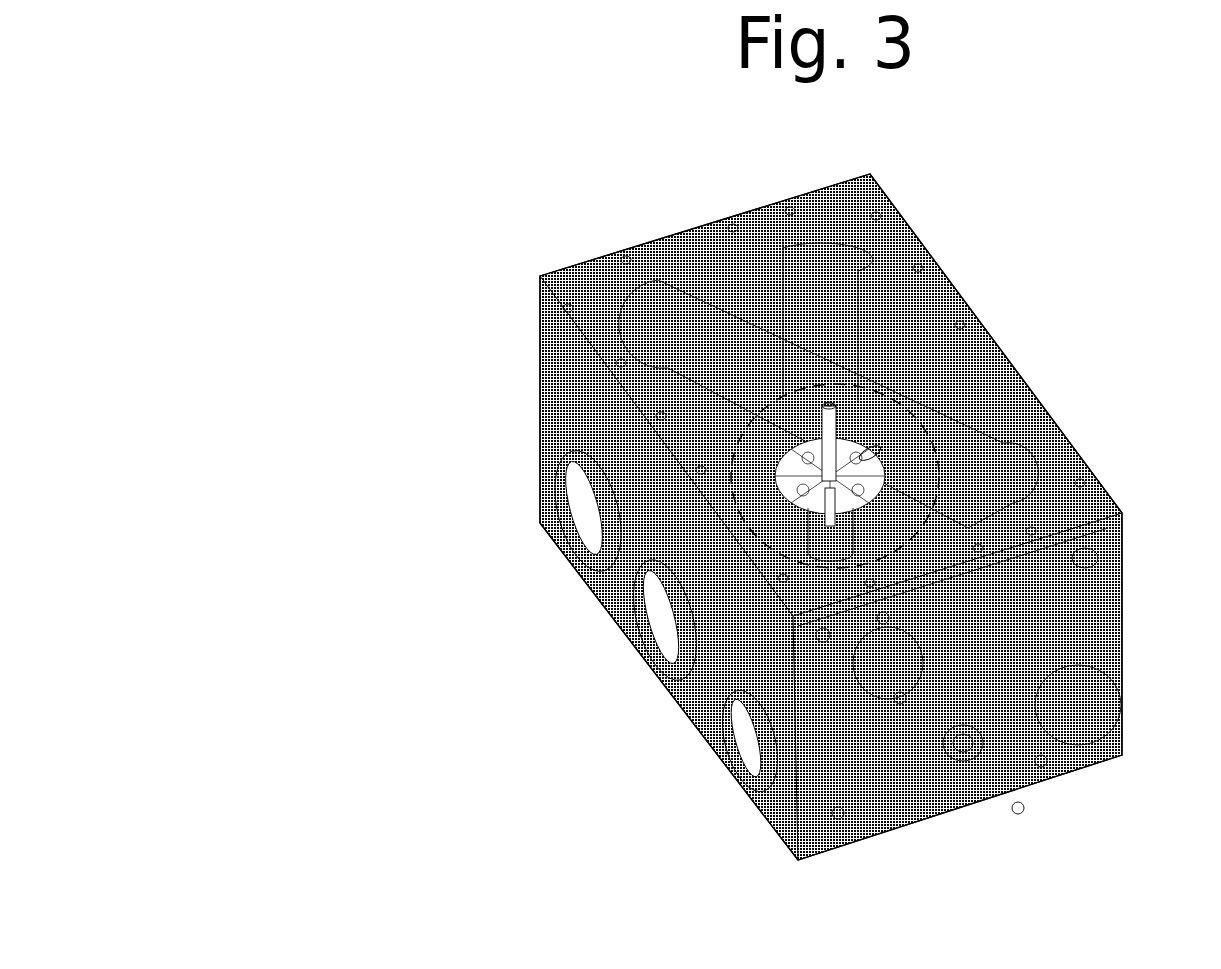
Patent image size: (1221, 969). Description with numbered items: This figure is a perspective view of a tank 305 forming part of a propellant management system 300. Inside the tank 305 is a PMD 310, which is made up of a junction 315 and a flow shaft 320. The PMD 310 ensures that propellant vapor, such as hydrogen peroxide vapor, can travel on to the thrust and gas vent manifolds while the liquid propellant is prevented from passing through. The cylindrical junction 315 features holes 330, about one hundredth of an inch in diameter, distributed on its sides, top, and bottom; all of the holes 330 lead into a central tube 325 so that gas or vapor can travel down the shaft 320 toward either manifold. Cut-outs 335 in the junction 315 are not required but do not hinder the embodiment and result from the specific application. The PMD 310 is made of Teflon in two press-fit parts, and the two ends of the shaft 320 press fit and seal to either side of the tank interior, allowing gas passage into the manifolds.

The propellant management system 300 is at (233, 56).
The tank 305 is at (1005, 447).
The PMD 310 is at (730, 404).
The junction 315 is at (855, 503).
The flow shaft 320 is at (813, 395).
The central tube 325 is at (818, 400).
The holes 330 is at (815, 503).
The cut-outs 335 is at (875, 442).